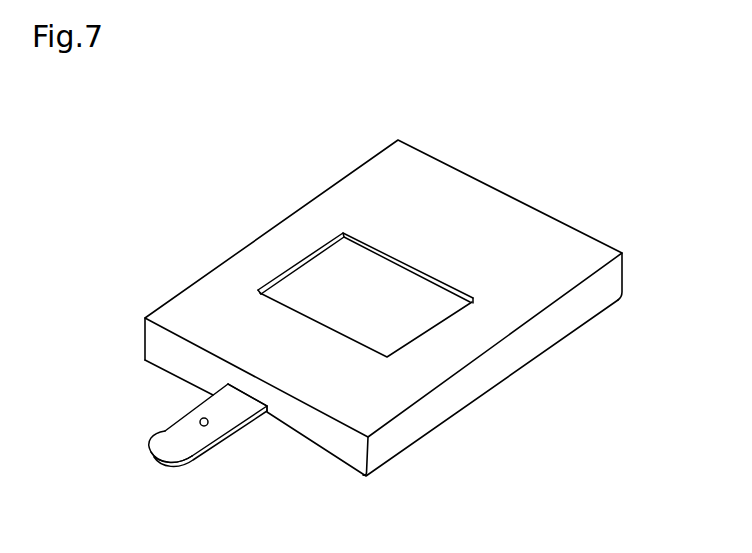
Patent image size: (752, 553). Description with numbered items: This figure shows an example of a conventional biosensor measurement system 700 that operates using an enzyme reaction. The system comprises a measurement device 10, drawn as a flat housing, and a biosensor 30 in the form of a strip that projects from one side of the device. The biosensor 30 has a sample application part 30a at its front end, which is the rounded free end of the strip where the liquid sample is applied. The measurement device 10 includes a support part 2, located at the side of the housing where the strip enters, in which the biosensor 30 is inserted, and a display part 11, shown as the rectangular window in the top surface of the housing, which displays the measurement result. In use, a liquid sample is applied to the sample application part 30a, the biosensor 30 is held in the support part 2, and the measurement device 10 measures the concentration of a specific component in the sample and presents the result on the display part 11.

The biosensor measurement system 700 is at (615, 193).
The measurement device 10 is at (500, 207).
The display part 11 is at (312, 280).
The biosensor 30 is at (168, 438).
The sample application part 30a is at (157, 453).
The support part 2 is at (247, 402).